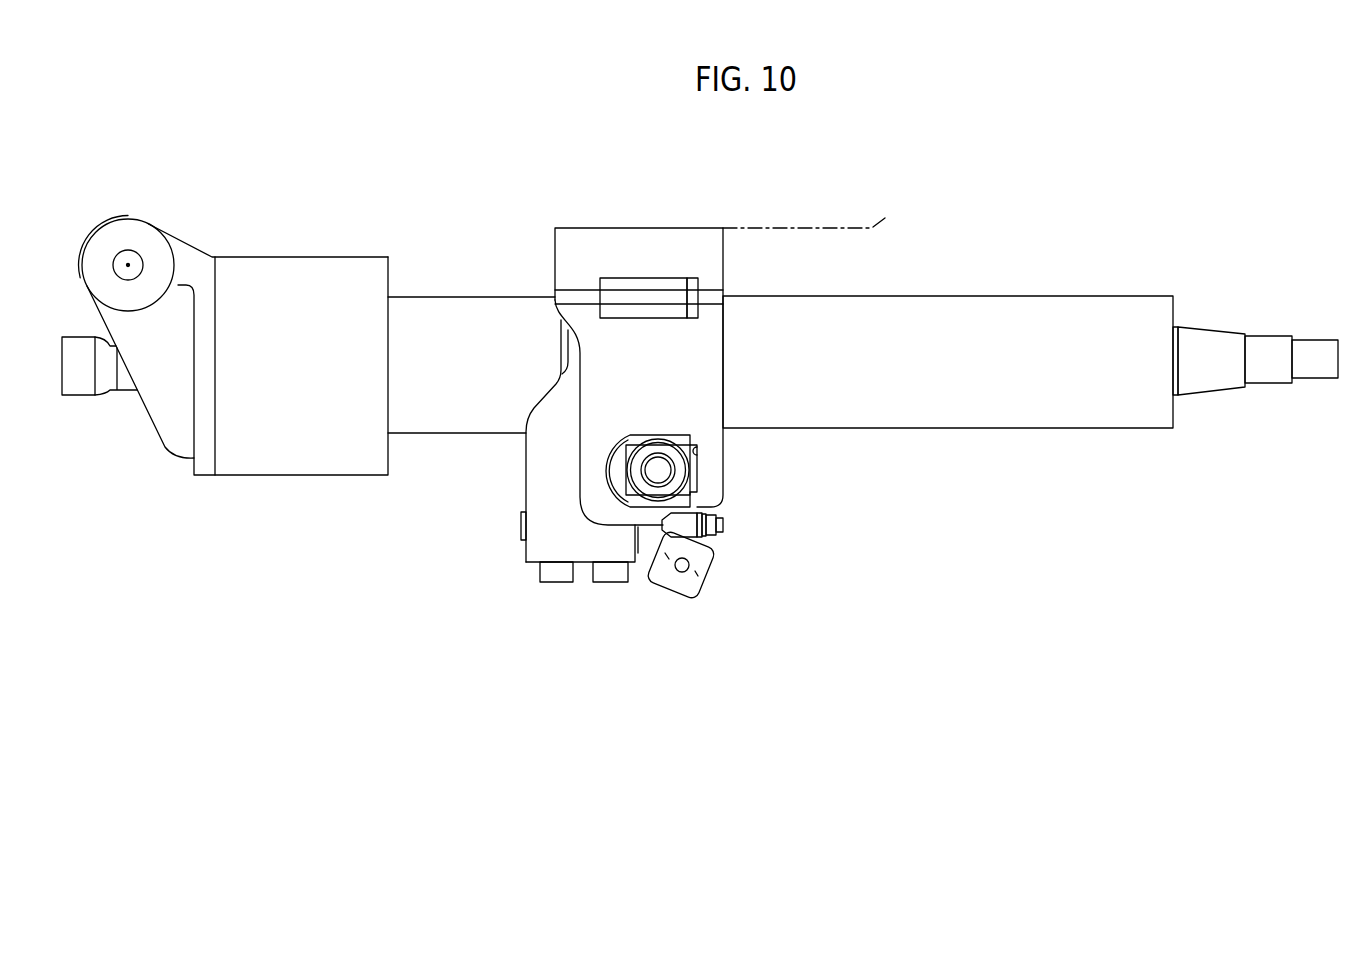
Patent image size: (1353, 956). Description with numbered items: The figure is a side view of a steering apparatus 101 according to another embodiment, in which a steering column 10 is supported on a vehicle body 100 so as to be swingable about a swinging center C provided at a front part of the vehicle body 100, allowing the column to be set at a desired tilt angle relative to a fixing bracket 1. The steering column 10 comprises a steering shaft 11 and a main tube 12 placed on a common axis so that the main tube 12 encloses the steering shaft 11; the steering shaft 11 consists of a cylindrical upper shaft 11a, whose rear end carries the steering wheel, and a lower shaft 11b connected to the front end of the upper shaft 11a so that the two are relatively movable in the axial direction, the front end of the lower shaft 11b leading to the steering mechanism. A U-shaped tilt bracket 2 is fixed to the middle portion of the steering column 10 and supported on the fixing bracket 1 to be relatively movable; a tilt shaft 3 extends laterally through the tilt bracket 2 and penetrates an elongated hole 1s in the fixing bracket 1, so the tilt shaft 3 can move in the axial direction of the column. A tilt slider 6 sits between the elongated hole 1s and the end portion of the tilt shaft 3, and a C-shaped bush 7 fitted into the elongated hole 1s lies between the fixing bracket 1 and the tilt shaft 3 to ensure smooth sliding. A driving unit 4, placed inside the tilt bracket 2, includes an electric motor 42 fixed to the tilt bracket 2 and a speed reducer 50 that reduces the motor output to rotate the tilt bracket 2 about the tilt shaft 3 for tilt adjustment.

The fixing bracket 1 is at (642, 233).
The elongated hole 1s is at (693, 455).
The tilt bracket 2 is at (540, 472).
The tilt shaft 3 is at (658, 470).
The driving unit 4 is at (735, 519).
The tilt slider 6 is at (692, 478).
The bush 7 is at (617, 490).
The steering column 10 is at (1030, 344).
The steering shaft 11 is at (1215, 323).
The upper shaft 11a is at (1270, 380).
The lower shaft 11b is at (78, 390).
The main tube 12 is at (1002, 412).
The electric motor 42 is at (680, 588).
The speed reducer 50 is at (687, 527).
The vehicle body 100 is at (792, 225).
The steering apparatus 101 is at (895, 475).
The swinging center C is at (128, 265).